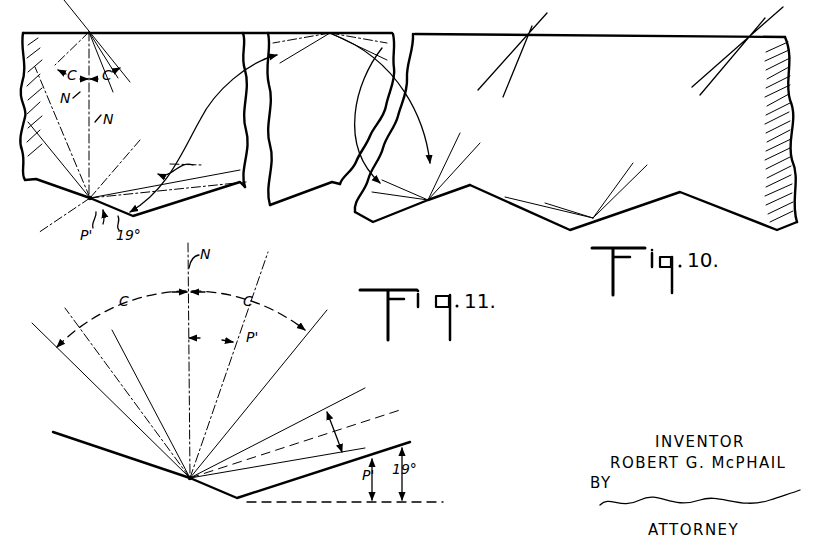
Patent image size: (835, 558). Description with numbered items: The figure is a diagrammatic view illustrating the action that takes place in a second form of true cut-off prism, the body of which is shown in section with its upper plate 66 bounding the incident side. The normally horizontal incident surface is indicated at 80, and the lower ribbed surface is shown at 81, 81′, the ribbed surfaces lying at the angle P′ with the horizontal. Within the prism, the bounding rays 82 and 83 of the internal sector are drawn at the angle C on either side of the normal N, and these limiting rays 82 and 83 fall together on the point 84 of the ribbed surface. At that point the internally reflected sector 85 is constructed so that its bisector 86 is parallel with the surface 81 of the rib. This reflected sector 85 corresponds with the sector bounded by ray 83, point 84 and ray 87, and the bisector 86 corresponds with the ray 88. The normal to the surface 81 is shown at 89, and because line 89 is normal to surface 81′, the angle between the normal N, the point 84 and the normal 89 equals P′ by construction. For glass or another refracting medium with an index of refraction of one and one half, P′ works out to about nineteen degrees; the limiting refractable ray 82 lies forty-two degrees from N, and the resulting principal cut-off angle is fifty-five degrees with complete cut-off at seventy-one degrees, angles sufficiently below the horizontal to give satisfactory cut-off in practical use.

In FIG. 10, the plate top surface 66 is at (526, 1).
In FIG. 10, the incident surface 80 is at (277, 29).
In FIG. 10, the ribbed surface 81 is at (220, 192).
In FIG. 11, the ribbed surface 81 is at (322, 490).
In FIG. 10, the ribbed surface 81′ is at (358, 224).
In FIG. 11, the ribbed surface 81′ is at (106, 456).
In FIG. 10, the bounding ray 82 is at (54, 82).
In FIG. 10, the bounding ray 83 is at (122, 72).
In FIG. 11, the bounding ray 83 is at (70, 372).
In FIG. 10, the point 84 is at (86, 198).
In FIG. 11, the point 84 is at (186, 486).
In FIG. 11, the internally reflected sector 85 is at (348, 434).
In FIG. 10, the bisector 86 is at (188, 166).
In FIG. 11, the bisector 86 is at (372, 413).
In FIG. 10, the ray 87 is at (62, 146).
In FIG. 11, the ray 87 is at (128, 360).
In FIG. 11, the ray 88 is at (68, 312).
In FIG. 11, the normal 89 is at (270, 280).